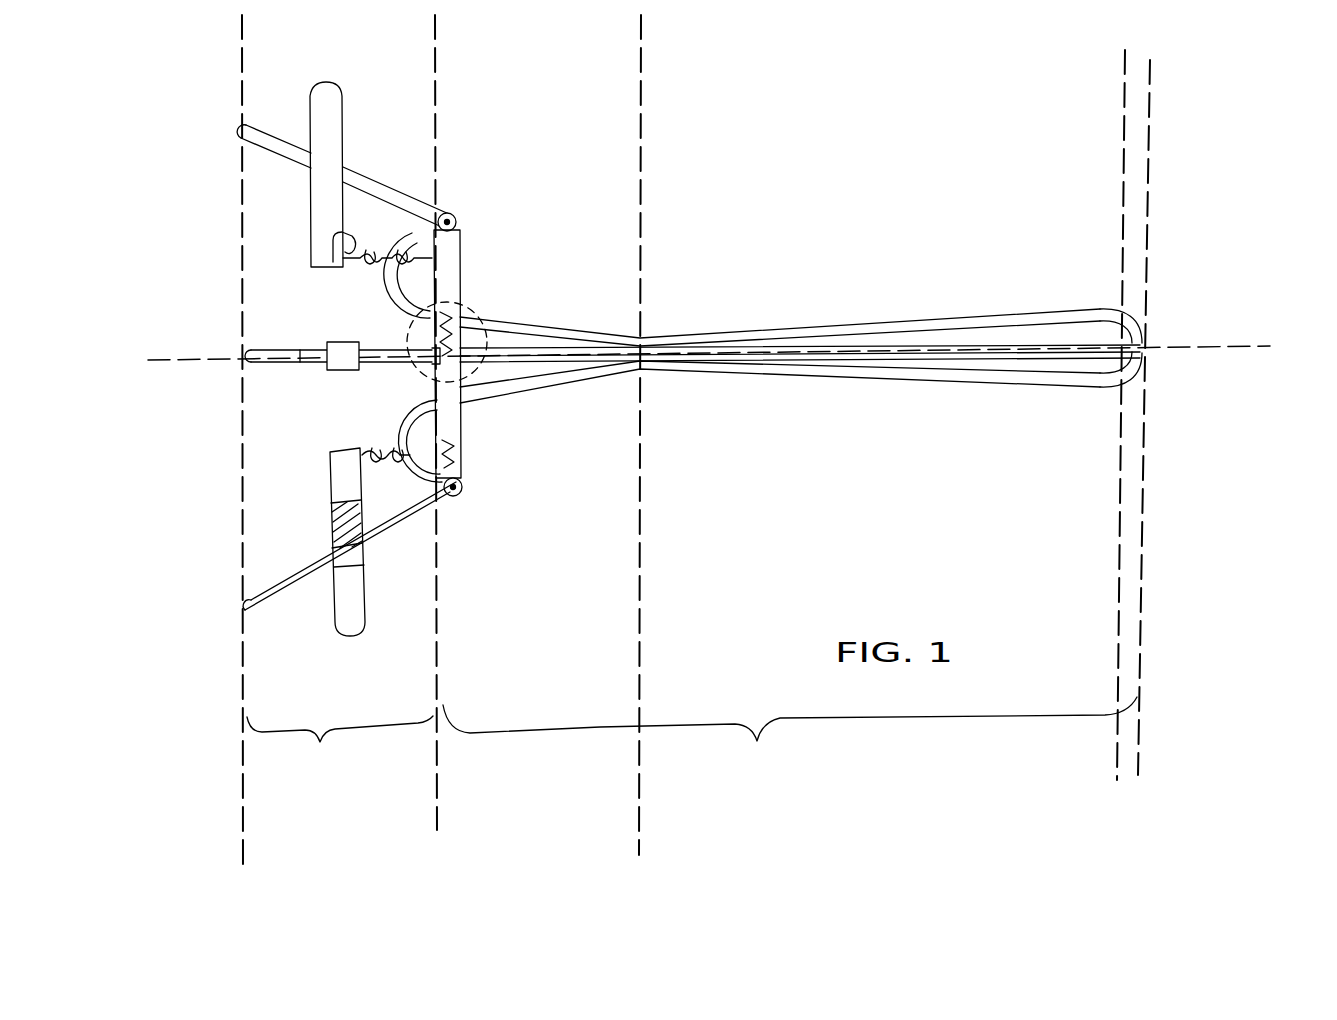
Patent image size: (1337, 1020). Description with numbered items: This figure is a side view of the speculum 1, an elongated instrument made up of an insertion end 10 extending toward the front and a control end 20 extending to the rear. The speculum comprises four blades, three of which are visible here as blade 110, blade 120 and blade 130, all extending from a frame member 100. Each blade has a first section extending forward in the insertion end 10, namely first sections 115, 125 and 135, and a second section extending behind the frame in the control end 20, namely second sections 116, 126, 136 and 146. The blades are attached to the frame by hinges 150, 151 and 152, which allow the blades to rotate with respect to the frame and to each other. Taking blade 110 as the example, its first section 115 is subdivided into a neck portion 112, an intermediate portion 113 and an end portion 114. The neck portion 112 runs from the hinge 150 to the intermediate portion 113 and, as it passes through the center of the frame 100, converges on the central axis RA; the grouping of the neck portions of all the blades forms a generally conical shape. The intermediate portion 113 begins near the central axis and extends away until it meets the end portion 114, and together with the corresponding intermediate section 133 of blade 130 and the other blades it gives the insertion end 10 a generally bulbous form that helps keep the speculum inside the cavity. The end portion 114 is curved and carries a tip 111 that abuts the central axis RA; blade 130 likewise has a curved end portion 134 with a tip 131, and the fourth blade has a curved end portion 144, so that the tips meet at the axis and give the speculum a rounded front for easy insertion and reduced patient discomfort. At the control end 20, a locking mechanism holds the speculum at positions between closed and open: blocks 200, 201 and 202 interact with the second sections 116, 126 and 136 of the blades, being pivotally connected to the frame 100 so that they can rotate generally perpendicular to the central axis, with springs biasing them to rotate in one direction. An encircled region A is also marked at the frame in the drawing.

The speculum 1 is at (810, 137).
The insertion end 10 is at (790, 744).
The control end 20 is at (340, 751).
The frame member 100 is at (457, 458).
The blade 110 is at (854, 358).
The tip 111 is at (1153, 356).
The neck portion 112 is at (545, 377).
The intermediate portion 113 is at (855, 372).
The end portion 114 is at (1133, 372).
The first section 115 is at (760, 370).
The second section 116 is at (281, 600).
The blade 120 is at (1022, 360).
The first section 125 is at (748, 350).
The second section 126 is at (240, 358).
The blade 130 is at (960, 313).
The tip 131 is at (1147, 343).
The intermediate section 133 is at (935, 353).
The end portion 134 is at (1133, 315).
The first section 135 is at (833, 330).
The second section 136 is at (240, 130).
The end portion 144 is at (933, 280).
The second section 146 is at (300, 365).
The hinge 150 is at (463, 492).
The hinge 151 is at (430, 373).
The hinge 152 is at (457, 206).
The block 200 is at (363, 628).
The block 201 is at (330, 342).
The block 202 is at (325, 95).
The detail region A is at (470, 293).